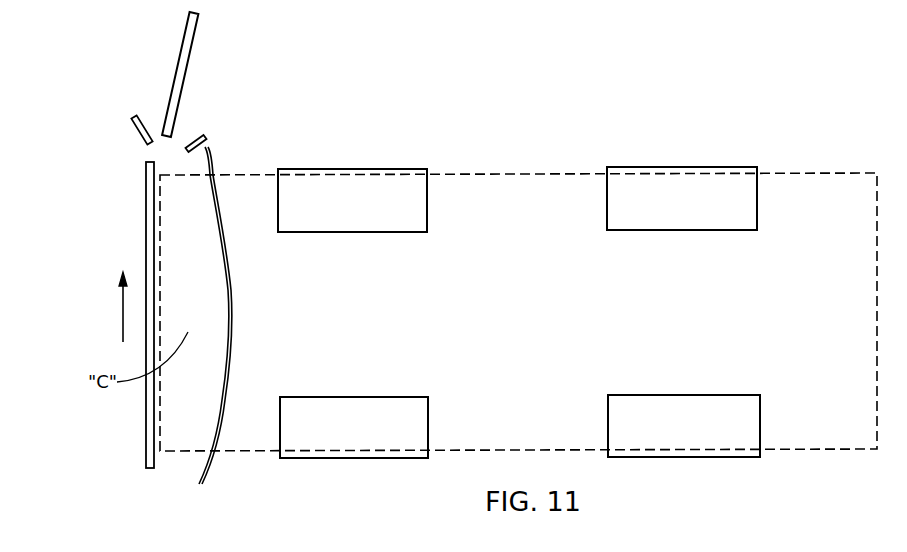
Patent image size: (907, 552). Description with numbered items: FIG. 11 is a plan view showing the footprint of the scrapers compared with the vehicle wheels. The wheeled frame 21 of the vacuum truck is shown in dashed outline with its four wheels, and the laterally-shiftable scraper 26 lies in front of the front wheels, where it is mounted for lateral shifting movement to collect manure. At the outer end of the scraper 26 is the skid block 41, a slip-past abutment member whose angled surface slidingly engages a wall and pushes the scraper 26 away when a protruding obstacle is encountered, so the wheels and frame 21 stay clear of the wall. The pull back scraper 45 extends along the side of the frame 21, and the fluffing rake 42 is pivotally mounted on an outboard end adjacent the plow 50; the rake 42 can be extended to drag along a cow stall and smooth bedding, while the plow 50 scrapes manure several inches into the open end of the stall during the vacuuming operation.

The frame 21 is at (243, 173).
The laterally-shiftable scraper 26 is at (228, 292).
The skid block 41 is at (193, 138).
The fluffing rake 42 is at (175, 57).
The pull back scraper 45 is at (145, 187).
The plow 50 is at (132, 115).